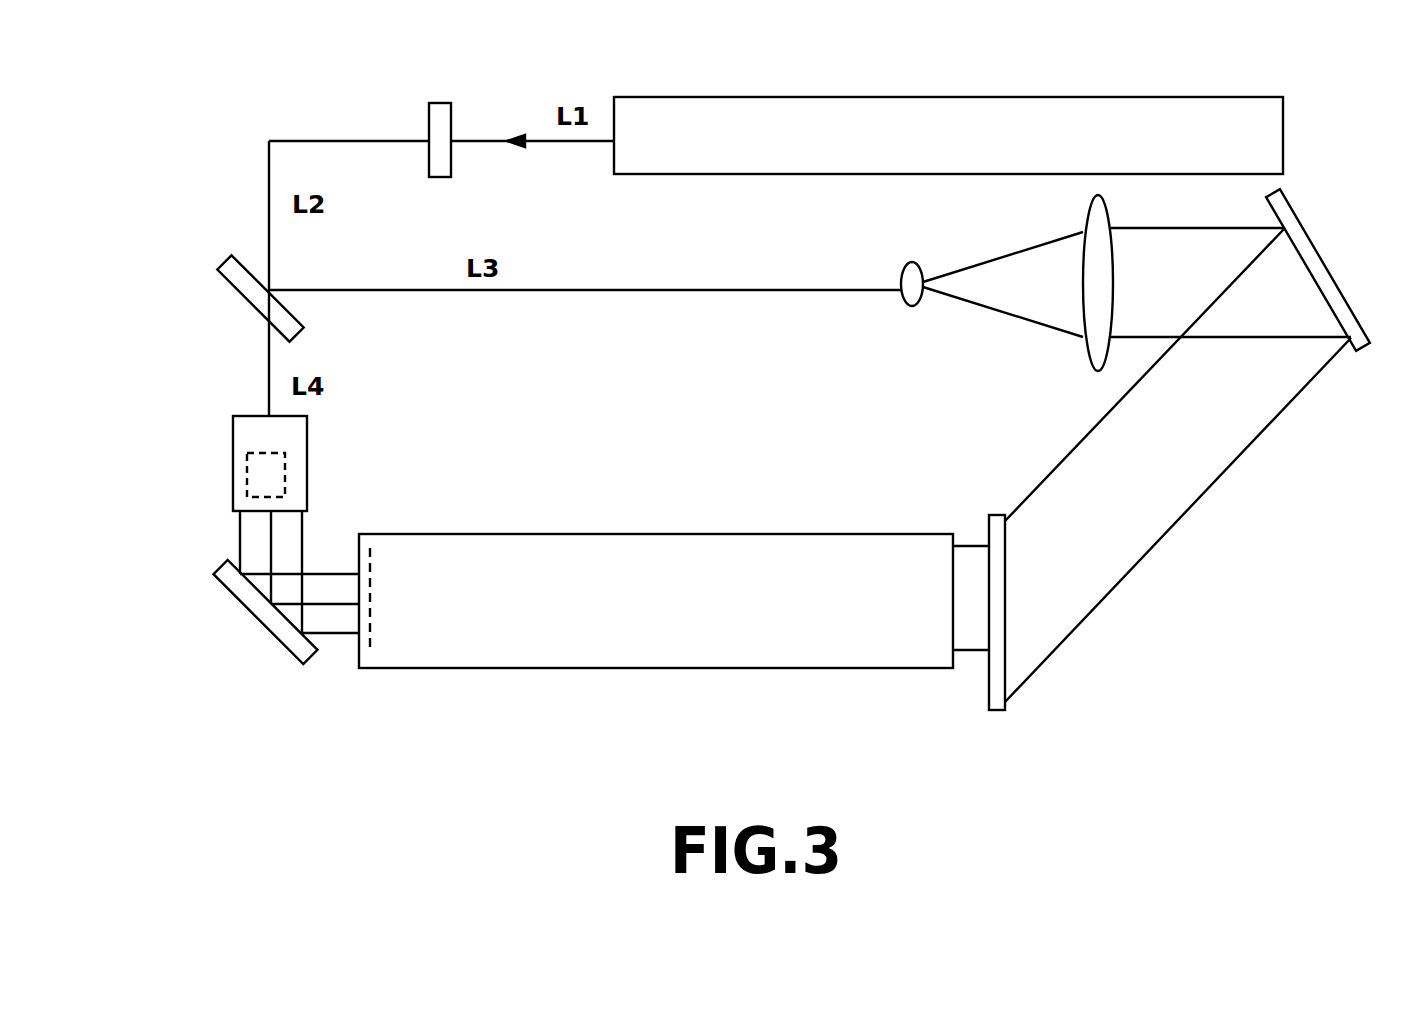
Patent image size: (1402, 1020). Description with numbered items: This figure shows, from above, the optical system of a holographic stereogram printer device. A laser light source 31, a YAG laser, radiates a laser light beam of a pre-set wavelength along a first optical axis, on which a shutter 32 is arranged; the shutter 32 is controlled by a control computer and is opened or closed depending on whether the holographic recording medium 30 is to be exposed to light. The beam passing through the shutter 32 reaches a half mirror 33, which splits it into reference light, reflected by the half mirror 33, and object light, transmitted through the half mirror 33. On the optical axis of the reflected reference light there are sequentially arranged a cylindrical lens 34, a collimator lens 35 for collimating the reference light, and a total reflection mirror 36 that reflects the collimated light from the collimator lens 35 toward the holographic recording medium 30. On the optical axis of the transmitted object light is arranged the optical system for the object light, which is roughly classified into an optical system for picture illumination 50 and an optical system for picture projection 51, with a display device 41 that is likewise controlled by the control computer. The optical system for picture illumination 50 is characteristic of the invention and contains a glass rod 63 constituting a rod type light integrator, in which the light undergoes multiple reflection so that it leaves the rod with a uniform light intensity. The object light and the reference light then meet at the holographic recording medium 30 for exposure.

The holographic recording medium 30 is at (1000, 680).
The laser light source 31 is at (718, 174).
The shutter 32 is at (451, 160).
The half mirror 33 is at (236, 290).
The cylindrical lens 34 is at (910, 300).
The collimator lens 35 is at (1095, 346).
The total reflection mirror 36 is at (1318, 258).
The display device 41 is at (370, 573).
The optical system for picture illumination 50 is at (307, 450).
The optical system for picture projection 51 is at (658, 533).
The glass rod 63 is at (247, 472).